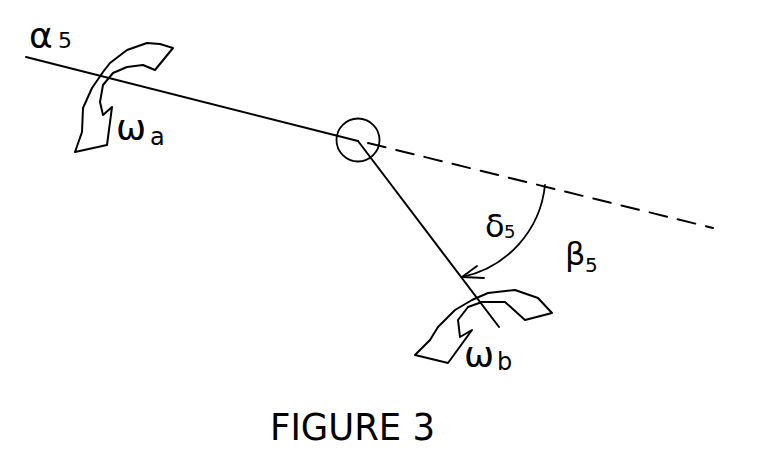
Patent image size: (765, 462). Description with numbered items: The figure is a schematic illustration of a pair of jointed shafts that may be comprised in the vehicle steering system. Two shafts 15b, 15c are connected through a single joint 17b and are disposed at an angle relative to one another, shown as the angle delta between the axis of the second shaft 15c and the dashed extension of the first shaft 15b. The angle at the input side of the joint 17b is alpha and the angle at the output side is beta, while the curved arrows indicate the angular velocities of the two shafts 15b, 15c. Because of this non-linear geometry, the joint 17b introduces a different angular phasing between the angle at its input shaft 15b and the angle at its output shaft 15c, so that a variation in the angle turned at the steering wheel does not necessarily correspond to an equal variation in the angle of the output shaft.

The shaft 15b is at (225, 108).
The shaft 15c is at (405, 204).
The joint 17b is at (350, 127).